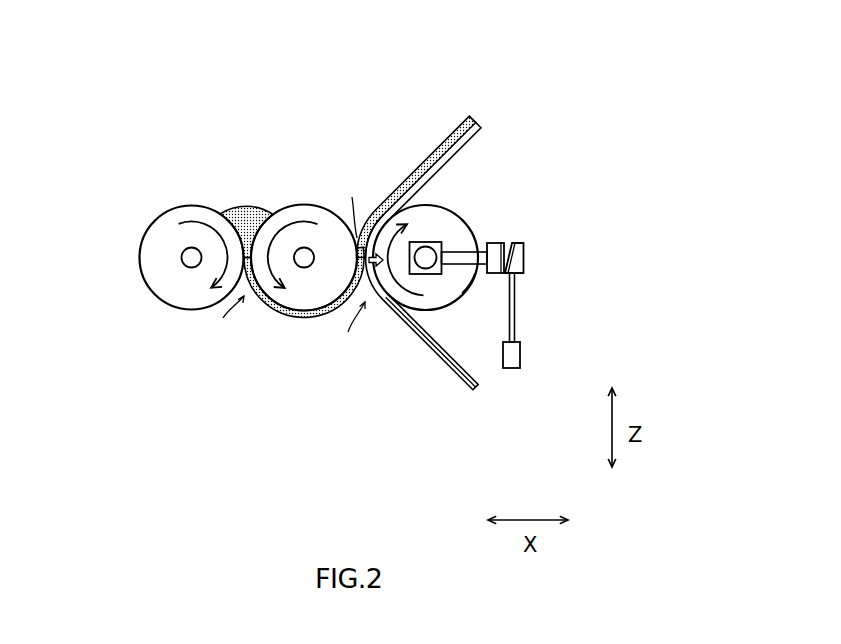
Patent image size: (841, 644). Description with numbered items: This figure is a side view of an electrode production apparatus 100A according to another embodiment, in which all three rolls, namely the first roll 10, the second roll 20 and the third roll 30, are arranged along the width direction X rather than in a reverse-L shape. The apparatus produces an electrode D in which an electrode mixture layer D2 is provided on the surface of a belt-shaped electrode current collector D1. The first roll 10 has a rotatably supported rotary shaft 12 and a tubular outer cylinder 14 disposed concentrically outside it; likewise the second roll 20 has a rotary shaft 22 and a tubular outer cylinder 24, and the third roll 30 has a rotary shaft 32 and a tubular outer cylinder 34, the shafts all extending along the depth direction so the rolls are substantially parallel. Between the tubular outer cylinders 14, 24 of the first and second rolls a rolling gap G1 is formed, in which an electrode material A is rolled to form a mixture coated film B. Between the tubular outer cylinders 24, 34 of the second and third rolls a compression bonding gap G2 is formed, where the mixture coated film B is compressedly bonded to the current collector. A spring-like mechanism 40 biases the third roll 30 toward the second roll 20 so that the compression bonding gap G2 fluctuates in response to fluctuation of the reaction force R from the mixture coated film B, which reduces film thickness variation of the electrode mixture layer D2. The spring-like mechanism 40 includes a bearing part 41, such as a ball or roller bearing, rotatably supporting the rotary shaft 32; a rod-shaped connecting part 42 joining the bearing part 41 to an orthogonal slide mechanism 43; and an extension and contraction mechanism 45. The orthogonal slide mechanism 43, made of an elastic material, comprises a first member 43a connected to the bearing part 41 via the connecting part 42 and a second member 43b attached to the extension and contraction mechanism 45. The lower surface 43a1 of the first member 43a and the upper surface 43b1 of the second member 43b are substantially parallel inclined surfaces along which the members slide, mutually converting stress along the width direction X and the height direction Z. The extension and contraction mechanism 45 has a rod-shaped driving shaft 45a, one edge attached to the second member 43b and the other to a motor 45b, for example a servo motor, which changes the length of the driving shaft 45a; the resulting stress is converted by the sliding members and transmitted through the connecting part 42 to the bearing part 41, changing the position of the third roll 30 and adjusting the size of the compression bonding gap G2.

The electrode production apparatus 100A is at (128, 76).
The first roll 10 is at (161, 245).
The rotary shaft 12 is at (187, 256).
The tubular outer cylinder 14 is at (160, 212).
The second roll 20 is at (304, 249).
The rotary shaft 22 is at (306, 268).
The tubular outer cylinder 24 is at (284, 206).
The third roll 30 is at (422, 285).
The rotary shaft 32 is at (430, 243).
The tubular outer cylinder 34 is at (417, 327).
The spring-like mechanism 40 is at (566, 252).
The bearing part 41 is at (462, 266).
The connecting part 42 is at (468, 280).
The orthogonal slide mechanism 43 is at (562, 209).
The first member 43a is at (560, 228).
The second member 43b is at (571, 233).
The lower surface 43a1 is at (512, 252).
The upper surface 43b1 is at (520, 263).
The extension and contraction mechanism 45 is at (580, 320).
The driving shaft 45a is at (518, 312).
The motor 45b is at (521, 350).
The electrode material A is at (247, 207).
The mixture coated film B is at (267, 304).
The electrode D is at (419, 226).
The electrode current collector D1 is at (430, 163).
The electrode mixture layer D2 is at (450, 134).
The rolling gap G1 is at (221, 323).
The compression bonding gap G2 is at (349, 332).
The reaction force R is at (352, 206).